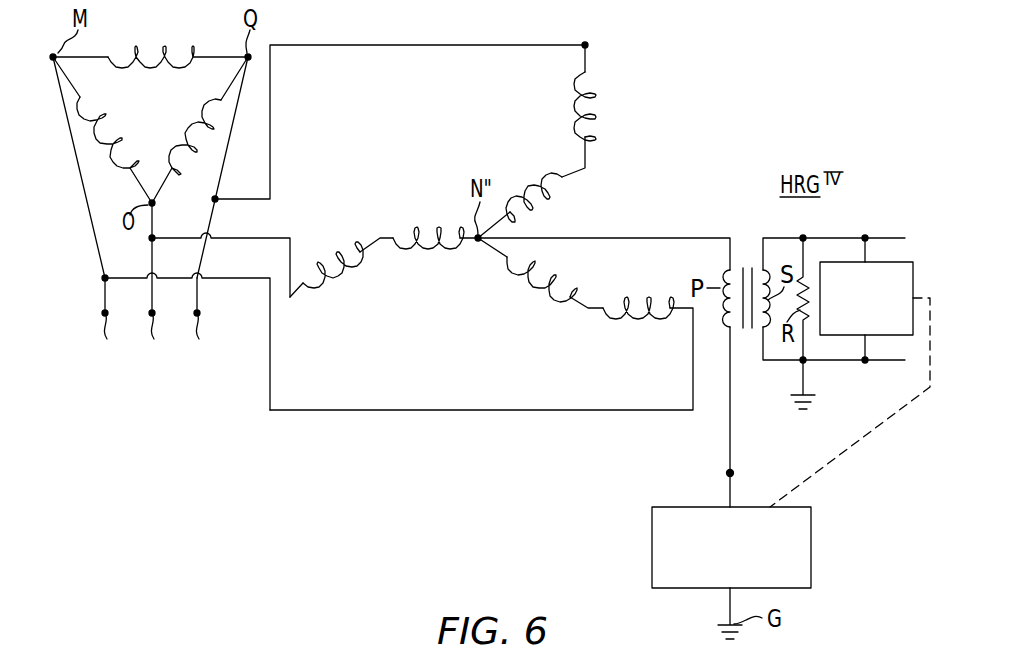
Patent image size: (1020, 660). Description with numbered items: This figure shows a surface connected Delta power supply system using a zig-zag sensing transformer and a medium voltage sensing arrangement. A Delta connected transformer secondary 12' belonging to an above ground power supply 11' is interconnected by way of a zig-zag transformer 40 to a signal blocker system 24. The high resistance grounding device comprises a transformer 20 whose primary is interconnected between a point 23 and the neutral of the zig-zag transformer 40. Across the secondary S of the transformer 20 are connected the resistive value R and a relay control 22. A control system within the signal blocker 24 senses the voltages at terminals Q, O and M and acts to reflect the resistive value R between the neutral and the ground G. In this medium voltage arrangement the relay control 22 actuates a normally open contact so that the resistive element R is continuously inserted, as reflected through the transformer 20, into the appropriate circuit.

The above ground power supply 11' is at (150, 126).
The Delta connected transformer secondary 12' is at (319, 227).
The zig-zag transformer 40 is at (633, 61).
The transformer 20 is at (758, 229).
The relay control 22 is at (885, 262).
The point 23 is at (730, 473).
The signal blocker system 24 is at (652, 548).